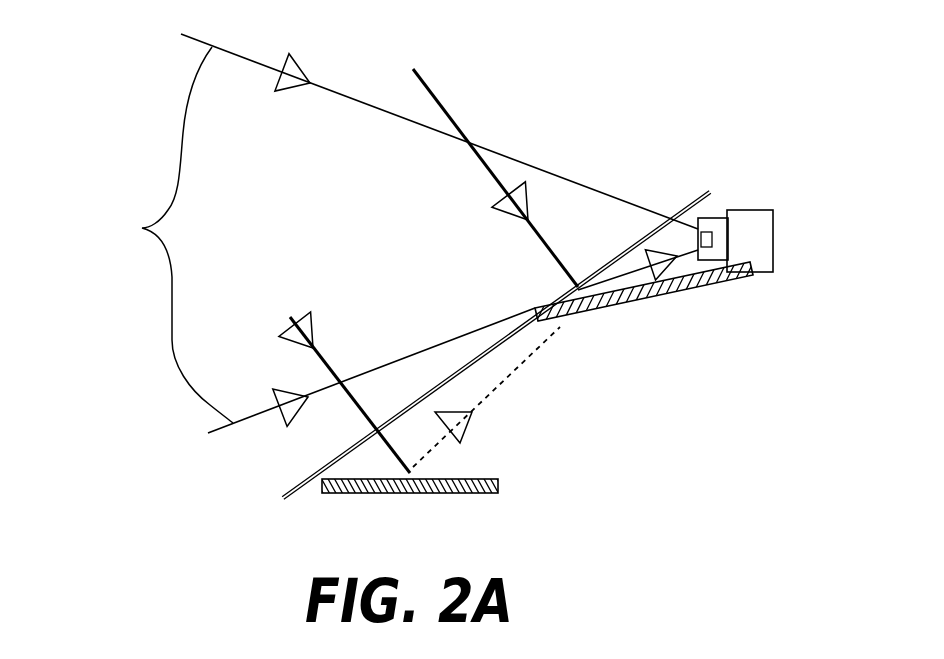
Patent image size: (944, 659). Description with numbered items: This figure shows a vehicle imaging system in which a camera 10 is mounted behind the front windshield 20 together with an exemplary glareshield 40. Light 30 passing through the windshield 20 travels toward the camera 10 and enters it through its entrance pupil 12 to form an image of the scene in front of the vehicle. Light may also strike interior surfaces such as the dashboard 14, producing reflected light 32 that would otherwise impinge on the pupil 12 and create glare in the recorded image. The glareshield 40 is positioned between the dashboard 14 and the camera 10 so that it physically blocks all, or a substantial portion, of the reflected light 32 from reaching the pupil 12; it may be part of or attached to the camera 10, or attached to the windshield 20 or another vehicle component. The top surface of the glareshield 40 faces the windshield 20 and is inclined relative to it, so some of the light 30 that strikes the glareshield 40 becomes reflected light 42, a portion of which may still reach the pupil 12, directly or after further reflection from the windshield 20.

The camera 10 is at (798, 246).
The pupil 12 is at (710, 232).
The dashboard 14 is at (499, 486).
The windshield 20 is at (300, 480).
The light 30 is at (415, 79).
The reflected light 32 is at (477, 403).
The glareshield 40 is at (691, 267).
The reflected light 42 is at (627, 270).